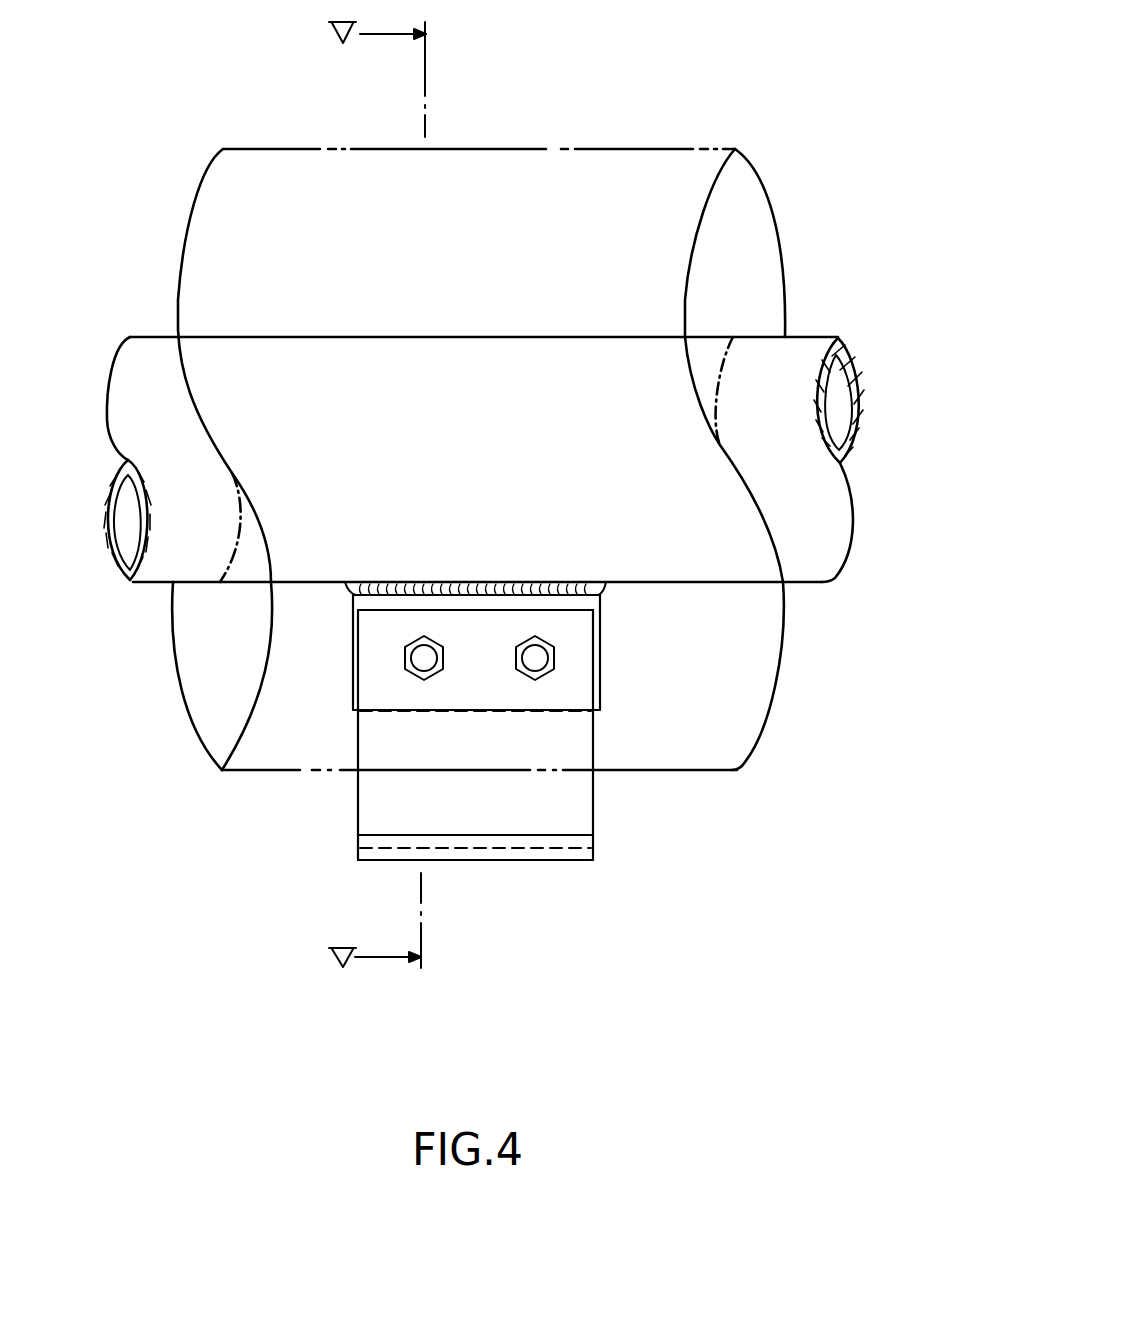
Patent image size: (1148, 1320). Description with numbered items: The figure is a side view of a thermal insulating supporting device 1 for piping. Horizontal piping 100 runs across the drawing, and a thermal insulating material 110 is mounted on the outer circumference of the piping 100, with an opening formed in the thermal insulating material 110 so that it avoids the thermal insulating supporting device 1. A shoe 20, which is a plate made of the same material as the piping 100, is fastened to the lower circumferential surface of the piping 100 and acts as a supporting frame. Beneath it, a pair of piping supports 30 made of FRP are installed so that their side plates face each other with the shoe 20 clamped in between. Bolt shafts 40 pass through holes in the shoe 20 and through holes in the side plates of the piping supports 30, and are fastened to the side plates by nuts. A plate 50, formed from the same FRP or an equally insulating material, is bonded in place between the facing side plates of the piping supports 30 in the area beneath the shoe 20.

The thermal insulating supporting device 1 is at (305, 745).
The shoe 20 is at (617, 602).
The piping supports 30 is at (345, 789).
The bolt shafts 40 is at (425, 662).
The plate 50 is at (532, 866).
The piping 100 is at (823, 486).
The thermal insulating material 110 is at (554, 165).